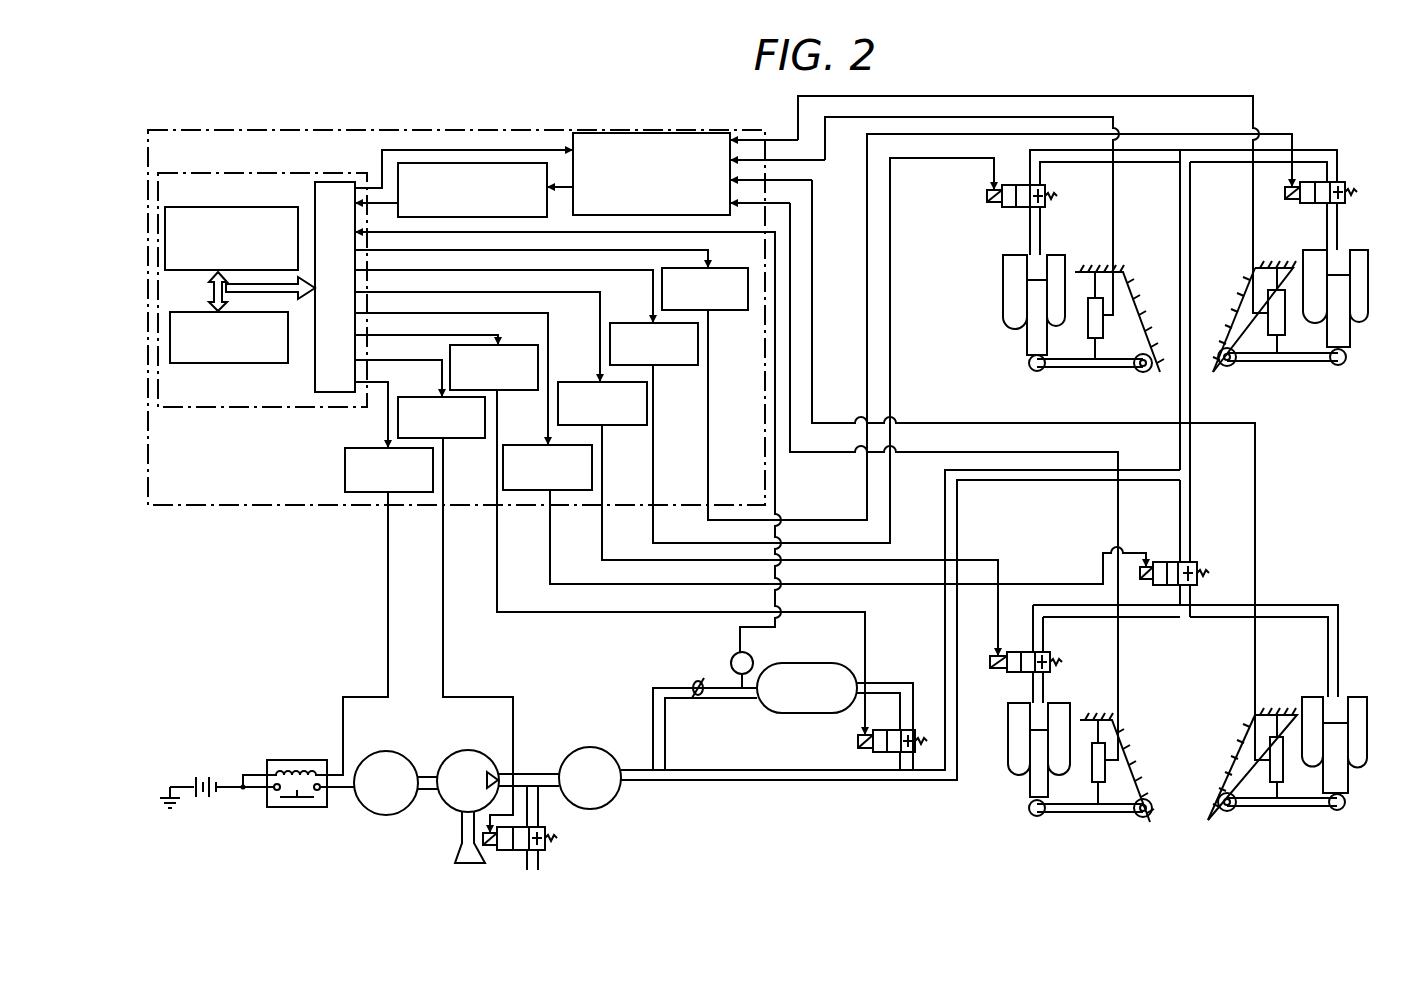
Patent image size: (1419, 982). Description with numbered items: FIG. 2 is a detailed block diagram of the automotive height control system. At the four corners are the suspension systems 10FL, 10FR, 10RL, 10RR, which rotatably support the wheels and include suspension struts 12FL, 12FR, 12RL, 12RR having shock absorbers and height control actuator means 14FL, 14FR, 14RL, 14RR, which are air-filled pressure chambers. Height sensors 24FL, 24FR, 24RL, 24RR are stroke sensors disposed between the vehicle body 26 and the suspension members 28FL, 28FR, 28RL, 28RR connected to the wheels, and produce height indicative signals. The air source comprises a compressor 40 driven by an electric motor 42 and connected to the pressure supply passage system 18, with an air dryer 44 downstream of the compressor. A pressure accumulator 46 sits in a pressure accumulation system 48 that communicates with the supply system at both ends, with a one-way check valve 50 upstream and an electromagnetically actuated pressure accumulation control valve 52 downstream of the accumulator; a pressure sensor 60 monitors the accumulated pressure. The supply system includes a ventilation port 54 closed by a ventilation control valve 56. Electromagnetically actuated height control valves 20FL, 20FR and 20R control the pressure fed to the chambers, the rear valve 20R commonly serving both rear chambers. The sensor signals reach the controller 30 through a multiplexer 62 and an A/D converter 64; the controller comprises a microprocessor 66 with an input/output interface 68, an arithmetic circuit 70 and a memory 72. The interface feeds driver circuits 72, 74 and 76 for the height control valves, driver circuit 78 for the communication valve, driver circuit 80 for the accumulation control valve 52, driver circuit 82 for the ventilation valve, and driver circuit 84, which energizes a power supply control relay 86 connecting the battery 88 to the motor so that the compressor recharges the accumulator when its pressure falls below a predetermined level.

The controller 30 is at (445, 128).
The microprocessor 66 is at (290, 173).
The arithmetic circuit 70 is at (219, 207).
The input/output interface 68 is at (315, 192).
The memory 72 is at (243, 363).
The A/D converter 64 is at (497, 163).
The multiplexer 62 is at (686, 133).
The driver circuit 74 is at (726, 268).
The driver circuit 76 is at (535, 445).
The driver circuit 78 is at (578, 382).
The driver circuit 80 is at (528, 345).
The driver circuit 82 is at (460, 438).
The driver circuit 84 is at (355, 448).
The pressure supply passage system 18 is at (956, 512).
The height control valve means 20FL is at (1038, 207).
The height control valve means 20FR is at (1338, 181).
The height control valve means 20R is at (1195, 560).
The height control actuator means 14FL is at (1012, 280).
The height control actuator means 14FR is at (1358, 262).
The height control actuator means 14RL is at (1012, 718).
The height control actuator means 14RR is at (1360, 700).
The suspension strut 12FL is at (1030, 340).
The suspension strut 12FR is at (1341, 345).
The suspension strut 12RL is at (1027, 788).
The suspension strut 12RR is at (1343, 780).
The suspension system 10FL is at (1016, 368).
The suspension system 10FR is at (1348, 368).
The suspension system 10RL is at (1027, 818).
The suspension system 10RR is at (1343, 813).
The height sensor 24FL is at (1100, 345).
The height sensor 24FR is at (1264, 335).
The height sensor 24RL is at (1103, 782).
The height sensor 24RR is at (1265, 778).
The suspension member 28FL is at (1068, 368).
The suspension member 28FR is at (1305, 361).
The suspension member 28RL is at (1075, 813).
The suspension member 28RR is at (1297, 806).
The vehicle body 26 is at (1136, 294).
The pressure sensor 60 is at (732, 657).
The one-way check valve 50 is at (694, 684).
The pressure accumulator 46 is at (806, 663).
The pressure accumulation system 48 is at (866, 682).
The pressure accumulation control valve 52 is at (915, 728).
The compressor 40 is at (472, 750).
The air dryer 44 is at (590, 747).
The electric motor 42 is at (405, 810).
The vehicular battery 88 is at (204, 800).
The power supply control relay 86 is at (314, 807).
The ventilation control valve 56 is at (510, 850).
The ventilation port 54 is at (540, 870).